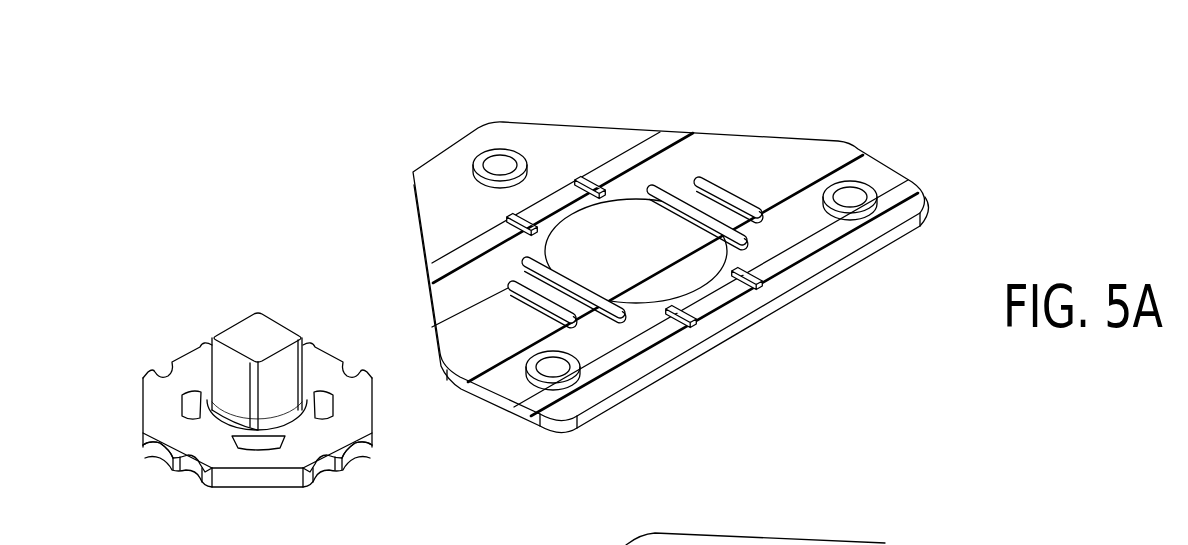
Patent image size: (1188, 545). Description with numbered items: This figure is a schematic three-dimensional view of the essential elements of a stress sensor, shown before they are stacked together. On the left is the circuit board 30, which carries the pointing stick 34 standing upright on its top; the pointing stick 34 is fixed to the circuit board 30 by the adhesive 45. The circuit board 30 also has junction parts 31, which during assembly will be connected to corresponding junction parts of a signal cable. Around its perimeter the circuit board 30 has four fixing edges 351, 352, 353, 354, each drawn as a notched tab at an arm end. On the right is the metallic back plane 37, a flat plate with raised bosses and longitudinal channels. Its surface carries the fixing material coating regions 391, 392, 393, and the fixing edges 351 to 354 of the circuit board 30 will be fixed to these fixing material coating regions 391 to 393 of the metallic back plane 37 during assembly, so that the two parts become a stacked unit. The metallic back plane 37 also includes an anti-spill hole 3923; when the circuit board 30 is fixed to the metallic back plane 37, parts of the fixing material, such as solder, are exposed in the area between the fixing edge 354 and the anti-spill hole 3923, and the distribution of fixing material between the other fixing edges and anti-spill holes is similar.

The circuit board 30 is at (238, 265).
The junction parts 31 is at (181, 398).
The pointing stick 34 is at (218, 368).
The fixing edge 351 is at (190, 343).
The fixing edge 352 is at (331, 330).
The fixing edge 353 is at (357, 463).
The fixing edge 354 is at (188, 478).
The adhesive 45 is at (327, 422).
The metallic back plane 37 is at (435, 98).
The fixing material coating region 391 is at (672, 133).
The fixing material coating region 392 is at (825, 148).
The fixing material coating region 393 is at (900, 188).
The anti-spill hole 3923 is at (597, 330).